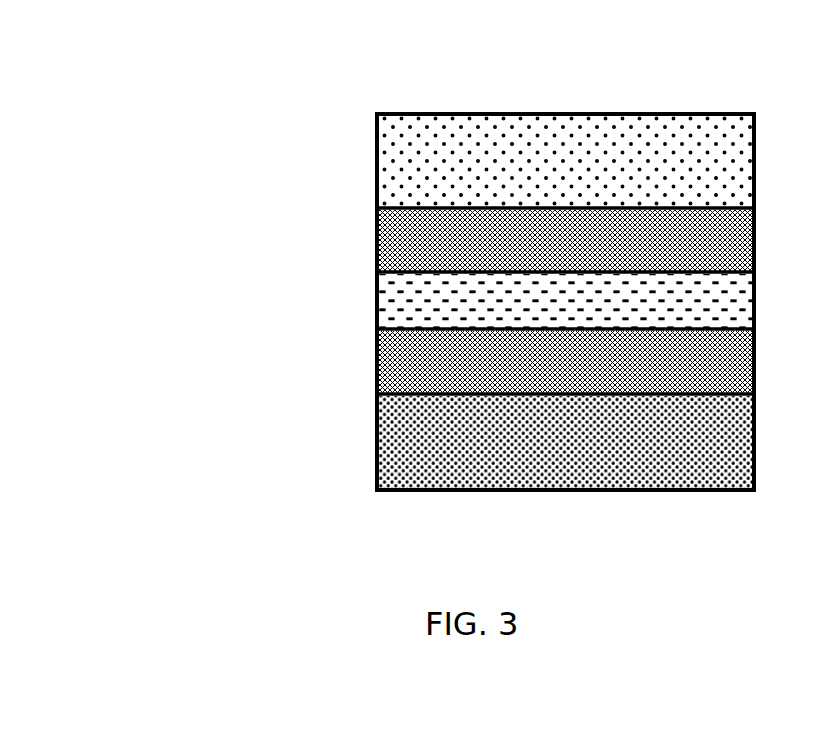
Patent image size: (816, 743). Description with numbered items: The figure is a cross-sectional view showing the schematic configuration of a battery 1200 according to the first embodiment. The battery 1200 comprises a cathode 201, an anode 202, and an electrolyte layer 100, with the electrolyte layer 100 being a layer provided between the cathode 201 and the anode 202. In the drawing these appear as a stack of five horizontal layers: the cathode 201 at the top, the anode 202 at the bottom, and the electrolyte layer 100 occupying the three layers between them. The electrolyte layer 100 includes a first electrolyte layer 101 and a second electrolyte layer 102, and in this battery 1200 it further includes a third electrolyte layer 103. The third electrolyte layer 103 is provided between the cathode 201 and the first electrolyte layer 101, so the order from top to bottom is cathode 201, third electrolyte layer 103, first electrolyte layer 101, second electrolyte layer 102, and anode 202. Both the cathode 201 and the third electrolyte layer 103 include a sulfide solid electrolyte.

The battery 1200 is at (620, 44).
The electrolyte layer 100 is at (203, 233).
The first electrolyte layer 101 is at (432, 295).
The second electrolyte layer 102 is at (428, 362).
The third electrolyte layer 103 is at (430, 240).
The cathode 201 is at (428, 145).
The anode 202 is at (428, 442).